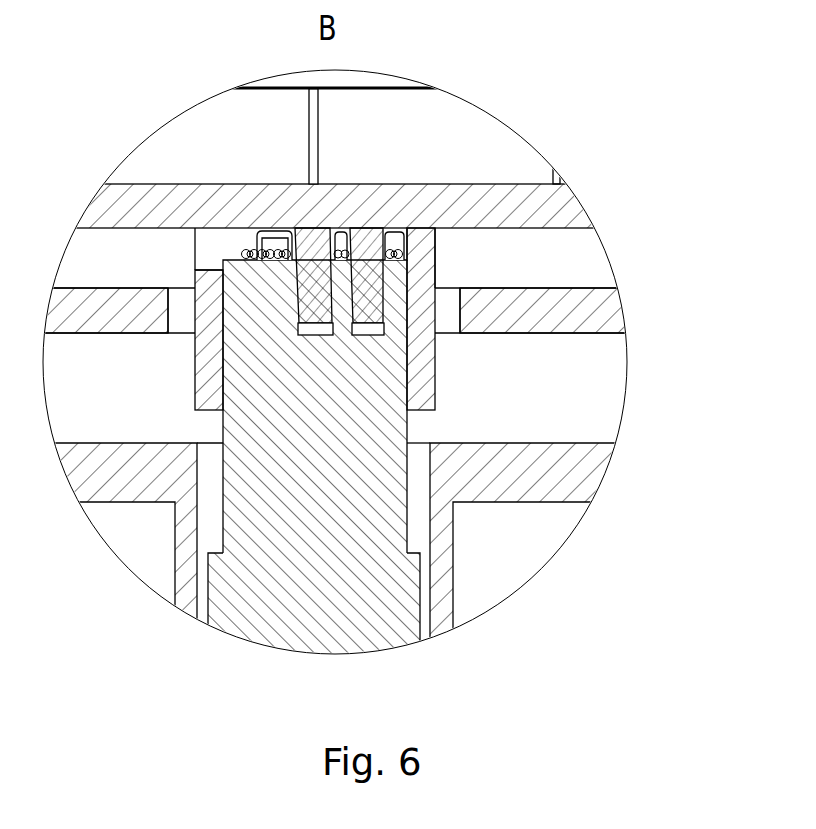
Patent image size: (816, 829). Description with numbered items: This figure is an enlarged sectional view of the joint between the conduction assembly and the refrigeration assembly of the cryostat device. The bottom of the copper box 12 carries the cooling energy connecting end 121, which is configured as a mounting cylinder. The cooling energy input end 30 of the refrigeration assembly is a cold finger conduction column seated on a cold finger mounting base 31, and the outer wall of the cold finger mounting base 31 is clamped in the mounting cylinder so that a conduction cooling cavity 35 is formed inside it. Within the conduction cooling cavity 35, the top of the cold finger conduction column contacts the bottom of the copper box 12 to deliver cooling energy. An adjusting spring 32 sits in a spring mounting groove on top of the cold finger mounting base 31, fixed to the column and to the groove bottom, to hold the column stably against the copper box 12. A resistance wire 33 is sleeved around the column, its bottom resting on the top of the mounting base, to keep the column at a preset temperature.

The copper box 12 is at (468, 200).
The cooling energy connecting end 121 is at (305, 370).
The cooling energy input end 30 is at (365, 313).
The cold finger mounting base 31 is at (412, 553).
The adjusting spring 32 is at (320, 322).
The resistance wire 33 is at (253, 245).
The conduction cooling cavity 35 is at (393, 240).